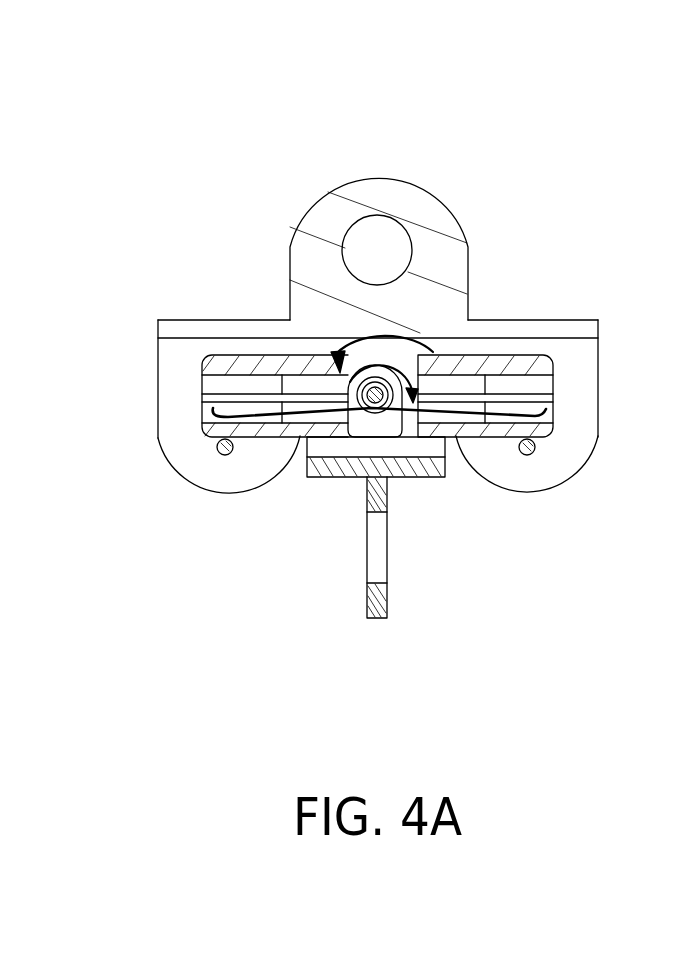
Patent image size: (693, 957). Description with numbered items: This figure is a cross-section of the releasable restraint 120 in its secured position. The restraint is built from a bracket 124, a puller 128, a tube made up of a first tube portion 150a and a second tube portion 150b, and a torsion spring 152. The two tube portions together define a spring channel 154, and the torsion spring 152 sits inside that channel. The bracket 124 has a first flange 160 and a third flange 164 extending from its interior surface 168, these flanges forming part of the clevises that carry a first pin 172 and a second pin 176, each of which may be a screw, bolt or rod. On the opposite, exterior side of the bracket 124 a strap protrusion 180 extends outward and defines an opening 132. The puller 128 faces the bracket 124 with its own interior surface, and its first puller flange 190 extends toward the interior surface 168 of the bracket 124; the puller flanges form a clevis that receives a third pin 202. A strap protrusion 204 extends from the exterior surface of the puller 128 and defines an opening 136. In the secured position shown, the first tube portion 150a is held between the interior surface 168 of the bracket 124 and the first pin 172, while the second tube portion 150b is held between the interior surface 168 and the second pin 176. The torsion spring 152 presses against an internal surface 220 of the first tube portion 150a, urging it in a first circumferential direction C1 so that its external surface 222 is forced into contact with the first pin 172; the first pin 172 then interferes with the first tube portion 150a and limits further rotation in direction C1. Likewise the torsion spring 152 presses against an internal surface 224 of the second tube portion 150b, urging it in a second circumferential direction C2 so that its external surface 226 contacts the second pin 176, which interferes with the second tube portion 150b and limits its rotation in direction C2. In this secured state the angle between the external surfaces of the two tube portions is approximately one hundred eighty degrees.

The releasable restraint 120 is at (180, 177).
The bracket 124 is at (183, 323).
The puller 128 is at (360, 470).
The opening 132 is at (396, 219).
The opening 136 is at (385, 570).
The first tube portion 150a is at (228, 365).
The second tube portion 150b is at (525, 367).
The torsion spring 152 is at (307, 415).
The spring channel 154 is at (565, 389).
The first flange 160 is at (173, 382).
The third flange 164 is at (512, 468).
The interior surface 168 is at (580, 335).
The first pin 172 is at (220, 450).
The second pin 176 is at (533, 452).
The strap protrusion 180 is at (325, 206).
The first puller flange 190 is at (433, 350).
The third pin 202 is at (372, 400).
The strap protrusion 204 is at (377, 602).
The internal surface 220 is at (207, 418).
The external surface 222 is at (247, 440).
The internal surface 224 is at (555, 413).
The external surface 226 is at (480, 437).
The first circumferential direction C1 is at (382, 354).
The second circumferential direction C2 is at (374, 387).